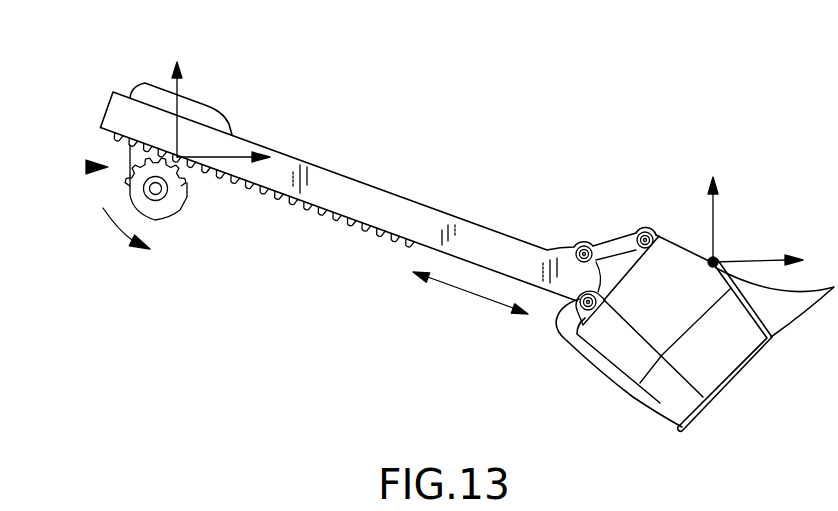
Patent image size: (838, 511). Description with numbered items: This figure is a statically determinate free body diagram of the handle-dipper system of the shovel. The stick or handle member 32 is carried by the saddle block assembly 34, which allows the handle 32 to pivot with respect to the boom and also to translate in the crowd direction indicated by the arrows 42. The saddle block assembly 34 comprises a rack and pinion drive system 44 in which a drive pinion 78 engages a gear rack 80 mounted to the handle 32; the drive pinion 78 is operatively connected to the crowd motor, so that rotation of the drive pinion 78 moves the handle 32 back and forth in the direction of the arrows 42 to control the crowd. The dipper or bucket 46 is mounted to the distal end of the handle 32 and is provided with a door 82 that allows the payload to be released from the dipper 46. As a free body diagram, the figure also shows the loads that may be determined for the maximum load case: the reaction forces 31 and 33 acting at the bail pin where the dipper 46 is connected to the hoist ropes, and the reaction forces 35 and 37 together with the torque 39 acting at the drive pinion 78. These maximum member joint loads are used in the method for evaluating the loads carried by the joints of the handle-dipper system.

The reaction force 31 is at (712, 207).
The handle member 32 is at (484, 226).
The reaction force 33 is at (774, 259).
The saddle block assembly 34 is at (148, 84).
The reaction force 35 is at (180, 92).
The reaction force 37 is at (243, 156).
The torque 39 is at (104, 232).
The arrows 42 is at (467, 293).
The rack and pinion drive system 44 is at (86, 167).
The dipper 46 is at (728, 380).
The drive pinion 78 is at (188, 197).
The gear rack 80 is at (333, 214).
The door 82 is at (567, 353).